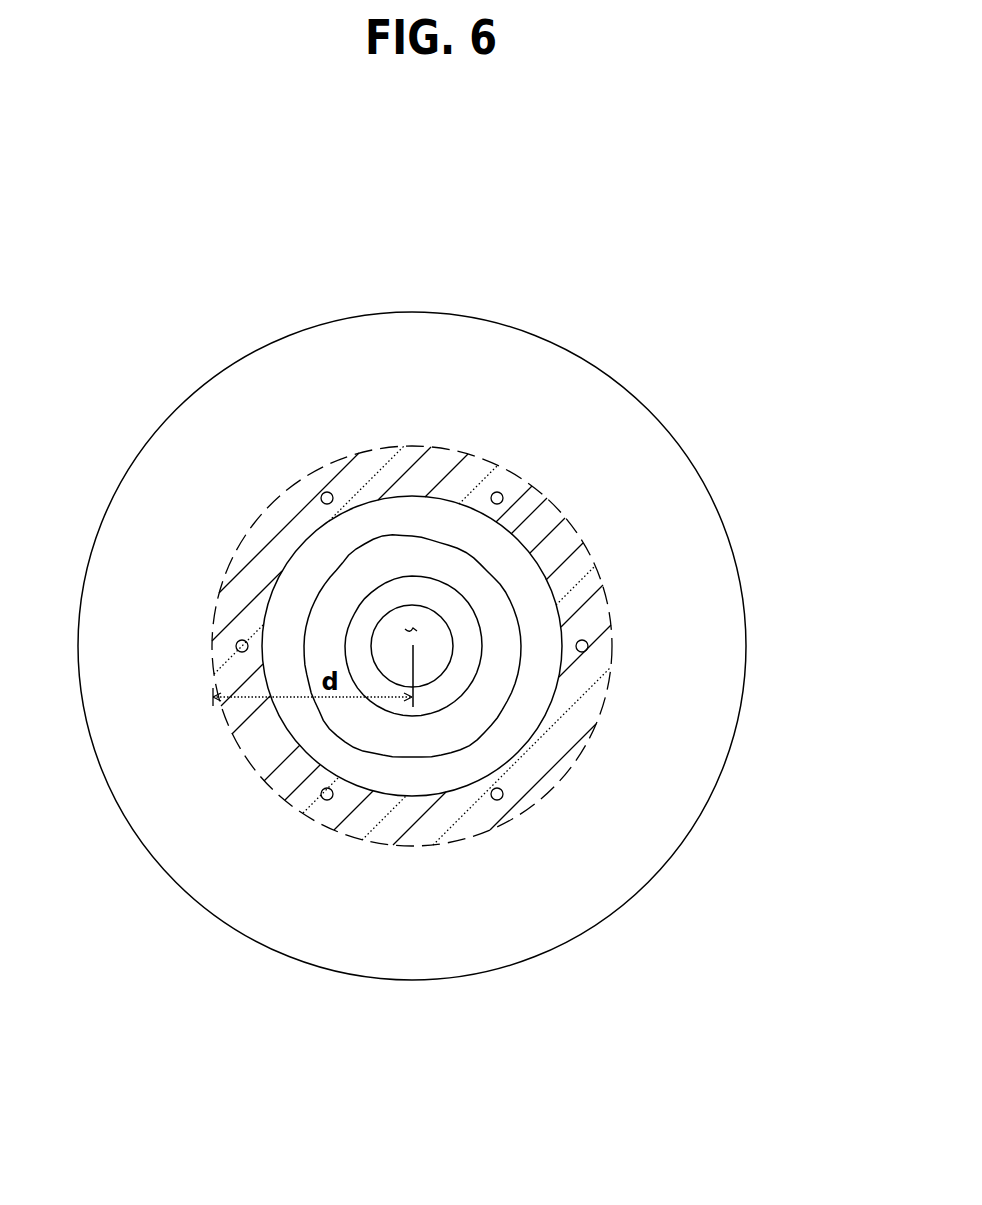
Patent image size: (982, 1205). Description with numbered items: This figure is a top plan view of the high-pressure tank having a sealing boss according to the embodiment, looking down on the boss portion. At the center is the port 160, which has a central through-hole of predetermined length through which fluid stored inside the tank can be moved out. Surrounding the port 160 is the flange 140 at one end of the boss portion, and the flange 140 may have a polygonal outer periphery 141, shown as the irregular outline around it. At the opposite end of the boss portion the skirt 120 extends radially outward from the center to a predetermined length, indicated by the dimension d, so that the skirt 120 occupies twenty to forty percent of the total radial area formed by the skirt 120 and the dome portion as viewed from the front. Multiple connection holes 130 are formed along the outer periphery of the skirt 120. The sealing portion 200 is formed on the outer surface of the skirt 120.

The sealing portion 200 is at (640, 862).
The skirt 120 is at (300, 727).
The connection holes 130 is at (498, 496).
The flange 140 is at (495, 608).
The polygonal outer periphery 141 is at (408, 757).
The port 160 is at (412, 626).